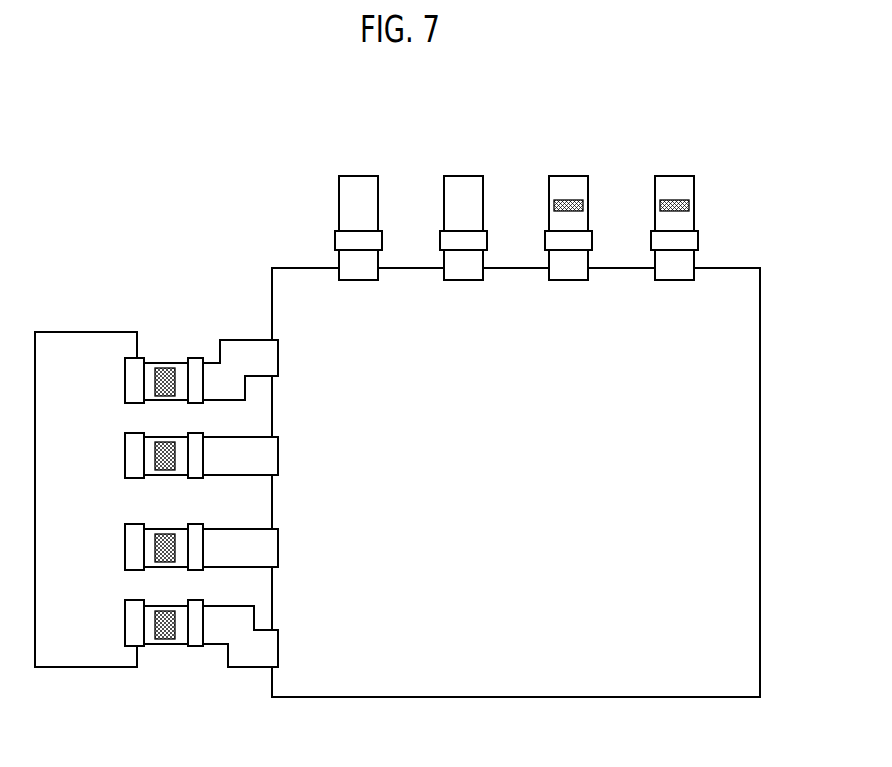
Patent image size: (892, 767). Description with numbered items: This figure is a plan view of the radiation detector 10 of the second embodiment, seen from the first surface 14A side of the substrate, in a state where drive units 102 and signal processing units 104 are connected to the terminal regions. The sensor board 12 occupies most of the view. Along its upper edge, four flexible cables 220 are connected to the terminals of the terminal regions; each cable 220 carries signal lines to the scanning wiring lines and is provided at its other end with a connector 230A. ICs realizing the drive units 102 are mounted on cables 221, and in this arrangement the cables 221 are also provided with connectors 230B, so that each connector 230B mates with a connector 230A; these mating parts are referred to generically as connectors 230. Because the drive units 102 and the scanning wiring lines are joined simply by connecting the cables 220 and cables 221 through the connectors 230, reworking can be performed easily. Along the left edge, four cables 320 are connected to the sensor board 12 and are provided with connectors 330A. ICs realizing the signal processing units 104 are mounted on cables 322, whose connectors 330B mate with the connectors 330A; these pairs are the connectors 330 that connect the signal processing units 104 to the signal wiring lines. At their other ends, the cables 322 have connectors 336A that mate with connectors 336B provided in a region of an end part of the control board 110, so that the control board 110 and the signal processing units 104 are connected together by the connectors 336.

The radiation detector 10 is at (740, 634).
The sensor board 12 is at (745, 542).
The first surface 14A is at (740, 420).
The drive unit 102 is at (690, 204).
The signal processing unit 104 is at (165, 370).
The control board 110 is at (88, 337).
The cable 220 is at (686, 264).
The cable 221 is at (688, 220).
The connector 230 is at (481, 228).
The connector 230A is at (337, 240).
The connector 230B is at (288, 228).
The cable 320 is at (259, 358).
The cable 322 is at (181, 365).
The connector 330 is at (265, 718).
The connector 330A is at (225, 592).
The connector 330B is at (175, 554).
The connector 336 is at (135, 632).
The connector 336A is at (113, 594).
The connector 336B is at (83, 556).